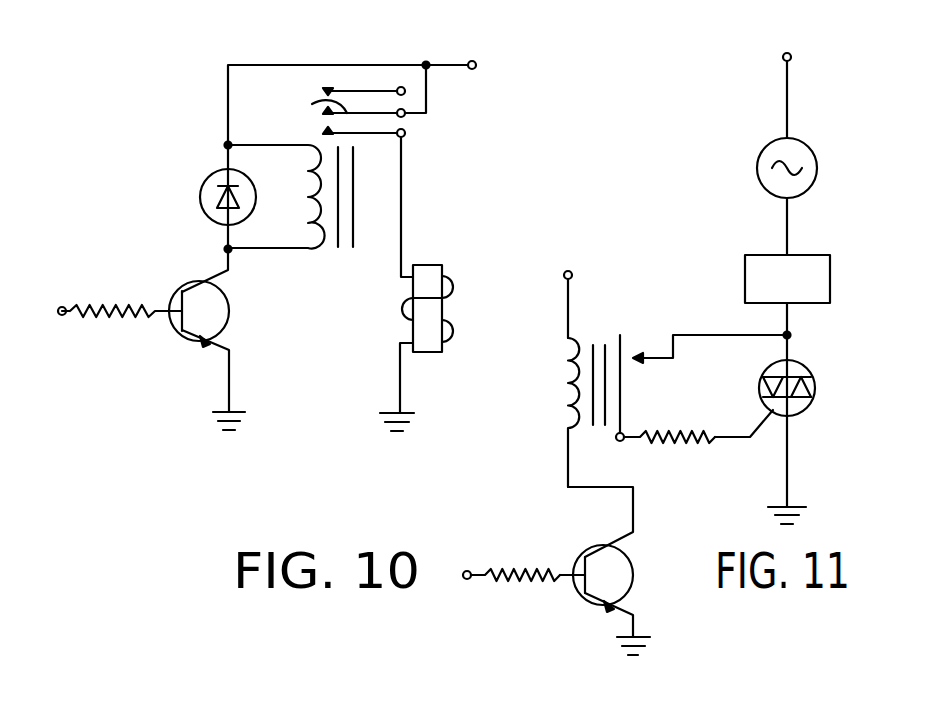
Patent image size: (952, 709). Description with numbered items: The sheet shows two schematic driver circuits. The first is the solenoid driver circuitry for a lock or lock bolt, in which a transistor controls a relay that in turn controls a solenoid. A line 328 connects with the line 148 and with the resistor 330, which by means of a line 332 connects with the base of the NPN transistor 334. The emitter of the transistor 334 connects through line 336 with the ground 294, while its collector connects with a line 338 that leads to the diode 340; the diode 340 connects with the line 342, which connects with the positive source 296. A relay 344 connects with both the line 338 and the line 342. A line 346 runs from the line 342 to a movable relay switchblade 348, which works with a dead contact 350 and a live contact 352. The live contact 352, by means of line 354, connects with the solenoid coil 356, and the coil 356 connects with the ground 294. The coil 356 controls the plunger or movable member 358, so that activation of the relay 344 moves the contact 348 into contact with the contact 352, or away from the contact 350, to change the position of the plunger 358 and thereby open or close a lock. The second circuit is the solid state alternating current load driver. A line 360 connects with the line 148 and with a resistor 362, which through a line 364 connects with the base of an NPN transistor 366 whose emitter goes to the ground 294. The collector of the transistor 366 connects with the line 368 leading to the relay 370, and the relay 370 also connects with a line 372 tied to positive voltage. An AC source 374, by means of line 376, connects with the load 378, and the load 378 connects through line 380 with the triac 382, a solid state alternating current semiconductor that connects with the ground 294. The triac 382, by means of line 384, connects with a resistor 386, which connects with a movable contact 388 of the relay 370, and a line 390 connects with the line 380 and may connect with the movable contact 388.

In FIG. 10, the line 148 is at (57, 313).
In FIG. 11, the line 148 is at (462, 573).
In FIG. 10, the ground 294 is at (220, 425).
In FIG. 11, the ground 294 is at (648, 650).
In FIG. 10, the positive source 296 is at (477, 61).
In FIG. 11, the positive source 296 is at (792, 91).
In FIG. 10, the line 328 is at (76, 305).
In FIG. 10, the resistor 330 is at (112, 318).
In FIG. 10, the line 332 is at (167, 320).
In FIG. 10, the NPN transistor 334 is at (232, 311).
In FIG. 10, the line 336 is at (232, 373).
In FIG. 10, the line 338 is at (232, 268).
In FIG. 10, the diode 340 is at (200, 197).
In FIG. 10, the line 342 is at (228, 89).
In FIG. 10, the relay 344 is at (313, 195).
In FIG. 10, the line 346 is at (429, 96).
In FIG. 10, the movable relay switchblade 348 is at (312, 104).
In FIG. 10, the dead contact 350 is at (357, 90).
In FIG. 10, the live contact 352 is at (401, 143).
In FIG. 10, the line 354 is at (403, 200).
In FIG. 10, the solenoid coil 356 is at (448, 291).
In FIG. 10, the plunger 358 is at (428, 327).
In FIG. 11, the line 360 is at (485, 570).
In FIG. 11, the resistor 362 is at (520, 584).
In FIG. 11, the line 364 is at (568, 566).
In FIG. 11, the NPN transistor 366 is at (640, 566).
In FIG. 11, the line 368 is at (640, 516).
In FIG. 11, the relay 370 is at (549, 412).
In FIG. 11, the line 372 is at (572, 301).
In FIG. 11, the AC source 374 is at (815, 152).
In FIG. 11, the line 376 is at (792, 226).
In FIG. 11, the load 378 is at (832, 283).
In FIG. 11, the line 380 is at (795, 343).
In FIG. 11, the triac 382 is at (817, 386).
In FIG. 11, the line 384 is at (745, 440).
In FIG. 11, the resistor 386 is at (683, 441).
In FIG. 11, the movable contact 388 is at (624, 406).
In FIG. 11, the line 390 is at (710, 335).